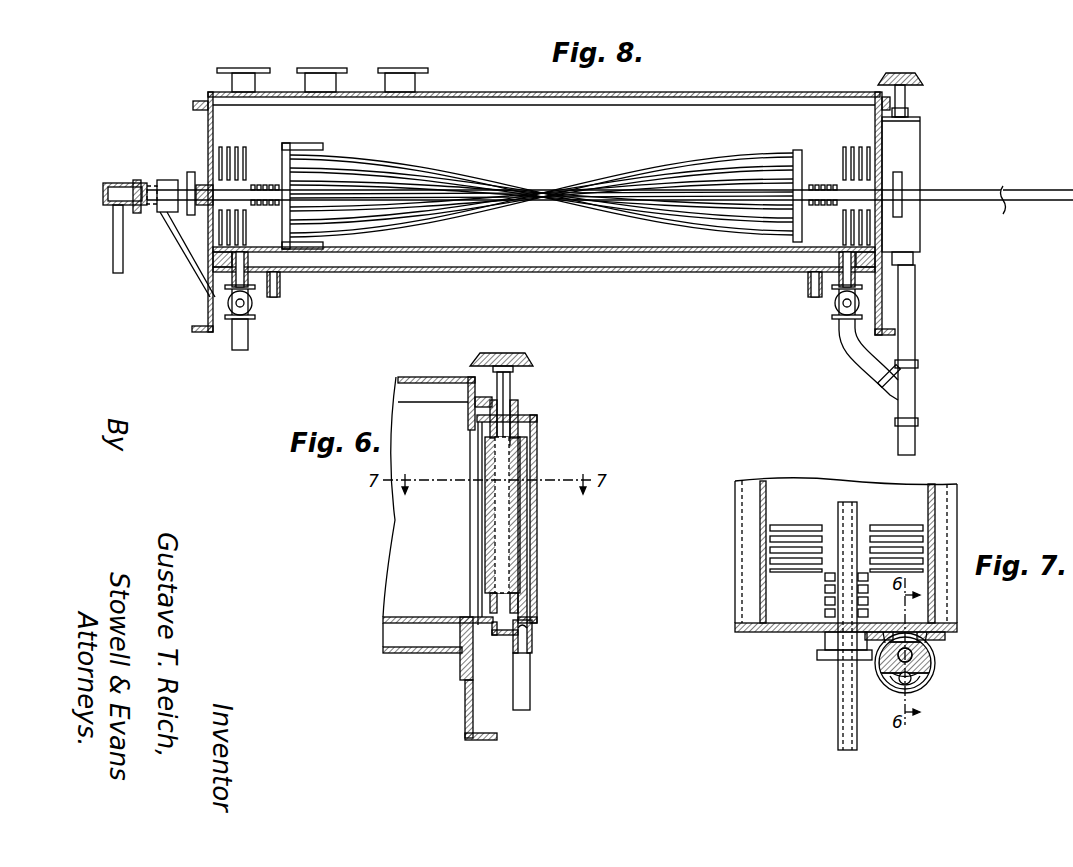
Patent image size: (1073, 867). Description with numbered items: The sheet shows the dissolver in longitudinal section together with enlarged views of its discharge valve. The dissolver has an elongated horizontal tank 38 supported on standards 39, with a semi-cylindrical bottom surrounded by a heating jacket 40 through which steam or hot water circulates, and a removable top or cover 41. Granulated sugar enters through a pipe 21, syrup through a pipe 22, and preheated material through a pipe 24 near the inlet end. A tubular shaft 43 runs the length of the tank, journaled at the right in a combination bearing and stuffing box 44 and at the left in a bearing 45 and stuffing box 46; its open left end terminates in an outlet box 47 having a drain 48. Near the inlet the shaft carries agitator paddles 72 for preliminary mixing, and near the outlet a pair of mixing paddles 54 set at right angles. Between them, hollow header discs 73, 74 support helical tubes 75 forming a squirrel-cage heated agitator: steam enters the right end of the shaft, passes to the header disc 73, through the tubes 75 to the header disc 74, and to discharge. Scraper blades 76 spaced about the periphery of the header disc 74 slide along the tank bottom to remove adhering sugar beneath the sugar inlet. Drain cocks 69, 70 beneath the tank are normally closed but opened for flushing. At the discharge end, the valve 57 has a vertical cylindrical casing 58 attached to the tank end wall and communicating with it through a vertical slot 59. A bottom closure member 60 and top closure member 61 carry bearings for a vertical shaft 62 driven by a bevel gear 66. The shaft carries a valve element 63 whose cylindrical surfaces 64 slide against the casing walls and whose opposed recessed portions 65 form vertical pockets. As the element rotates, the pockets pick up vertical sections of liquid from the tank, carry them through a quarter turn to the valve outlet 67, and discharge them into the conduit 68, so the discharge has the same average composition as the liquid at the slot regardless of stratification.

In FIG. 8, the pipe 24 is at (240, 68).
In FIG. 8, the pipe 21 is at (321, 68).
In FIG. 8, the pipe 22 is at (410, 68).
In FIG. 8, the top or cover 41 is at (538, 100).
In FIG. 6, the top or cover 41 is at (440, 377).
In FIG. 8, the tank 38 is at (208, 135).
In FIG. 6, the tank 38 is at (423, 617).
In FIG. 7, the tank 38 is at (766, 495).
In FIG. 8, the heating jacket 40 is at (425, 272).
In FIG. 6, the heating jacket 40 is at (427, 653).
In FIG. 7, the heating jacket 40 is at (735, 572).
In FIG. 8, the standards 39 is at (200, 332).
In FIG. 6, the standards 39 is at (473, 712).
In FIG. 8, the shaft 43 is at (972, 190).
In FIG. 7, the shaft 43 is at (857, 504).
In FIG. 8, the outlet box 47 is at (123, 183).
In FIG. 8, the drain 48 is at (113, 247).
In FIG. 8, the bearing 45 is at (167, 180).
In FIG. 8, the stuffing box 46 is at (191, 172).
In FIG. 8, the agitator paddles 72 is at (247, 165).
In FIG. 8, the mixing paddles 54 is at (841, 185).
In FIG. 7, the mixing paddles 54 is at (811, 527).
In FIG. 8, the header disc 74 is at (282, 233).
In FIG. 8, the scraper blades 76 is at (311, 143).
In FIG. 8, the header disc 73 is at (801, 150).
In FIG. 8, the helical tubes 75 is at (449, 170).
In FIG. 8, the discharge device or valve 57 is at (922, 148).
In FIG. 6, the discharge device or valve 57 is at (537, 448).
In FIG. 8, the combination bearing and stuffing box 44 is at (897, 172).
In FIG. 7, the combination bearing and stuffing box 44 is at (823, 660).
In FIG. 8, the drain cock 70 is at (255, 320).
In FIG. 8, the drain cock 69 is at (834, 317).
In FIG. 6, the cylindrical casing 58 is at (537, 541).
In FIG. 7, the cylindrical casing 58 is at (920, 690).
In FIG. 6, the top closure member 61 is at (520, 422).
In FIG. 6, the bevel gear 66 is at (533, 362).
In FIG. 6, the vertical shaft 62 is at (511, 391).
In FIG. 7, the vertical shaft 62 is at (912, 653).
In FIG. 6, the vertical slot 59 is at (470, 466).
In FIG. 7, the vertical slot 59 is at (903, 632).
In FIG. 6, the cylindrical surfaces 64 is at (487, 569).
In FIG. 7, the cylindrical surfaces 64 is at (935, 664).
In FIG. 6, the valve element 63 is at (522, 515).
In FIG. 7, the valve element 63 is at (928, 676).
In FIG. 6, the recessed portions 65 is at (490, 605).
In FIG. 7, the recessed portions 65 is at (894, 678).
In FIG. 6, the bottom closure member 60 is at (490, 636).
In FIG. 6, the valve outlet 67 is at (529, 632).
In FIG. 7, the valve outlet 67 is at (900, 683).
In FIG. 6, the conduit 68 is at (530, 681).